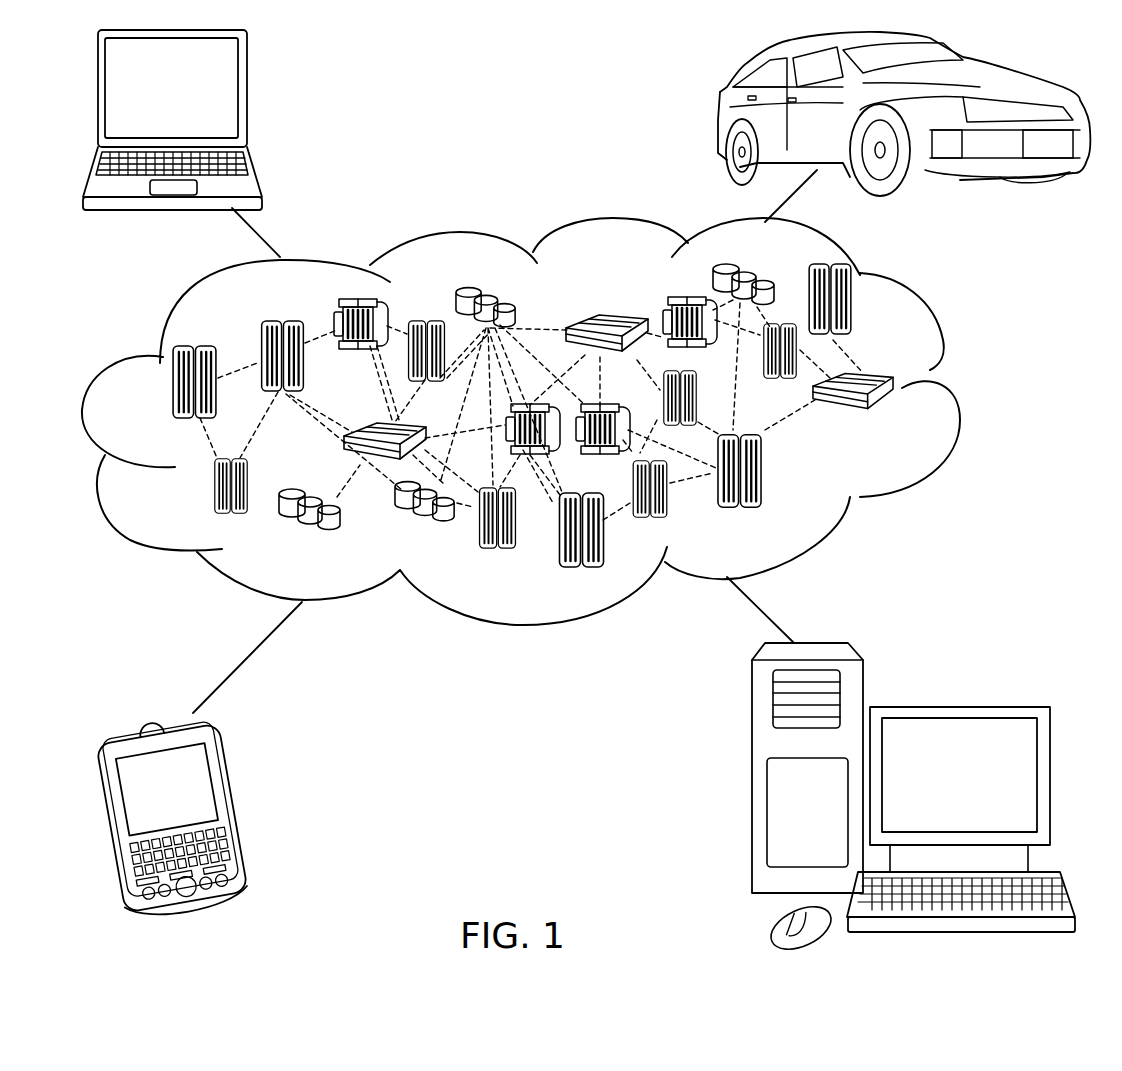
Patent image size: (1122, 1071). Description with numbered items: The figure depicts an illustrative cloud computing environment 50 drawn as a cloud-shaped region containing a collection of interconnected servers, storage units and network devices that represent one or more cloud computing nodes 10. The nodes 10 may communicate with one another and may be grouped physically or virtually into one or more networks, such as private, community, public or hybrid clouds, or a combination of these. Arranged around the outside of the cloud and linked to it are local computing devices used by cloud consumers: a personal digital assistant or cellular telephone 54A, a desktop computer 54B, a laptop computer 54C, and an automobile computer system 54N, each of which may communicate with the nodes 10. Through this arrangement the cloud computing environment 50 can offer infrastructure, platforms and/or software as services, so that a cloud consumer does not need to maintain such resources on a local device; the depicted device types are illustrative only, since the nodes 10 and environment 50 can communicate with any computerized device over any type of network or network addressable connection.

The cloud computing nodes 10 is at (903, 427).
The cloud computing environment 50 is at (957, 393).
The personal digital assistant (PDA) or cellular telephone 54A is at (237, 807).
The desktop computer 54B is at (957, 704).
The laptop computer 54C is at (247, 99).
The automobile computer system 54N is at (718, 113).